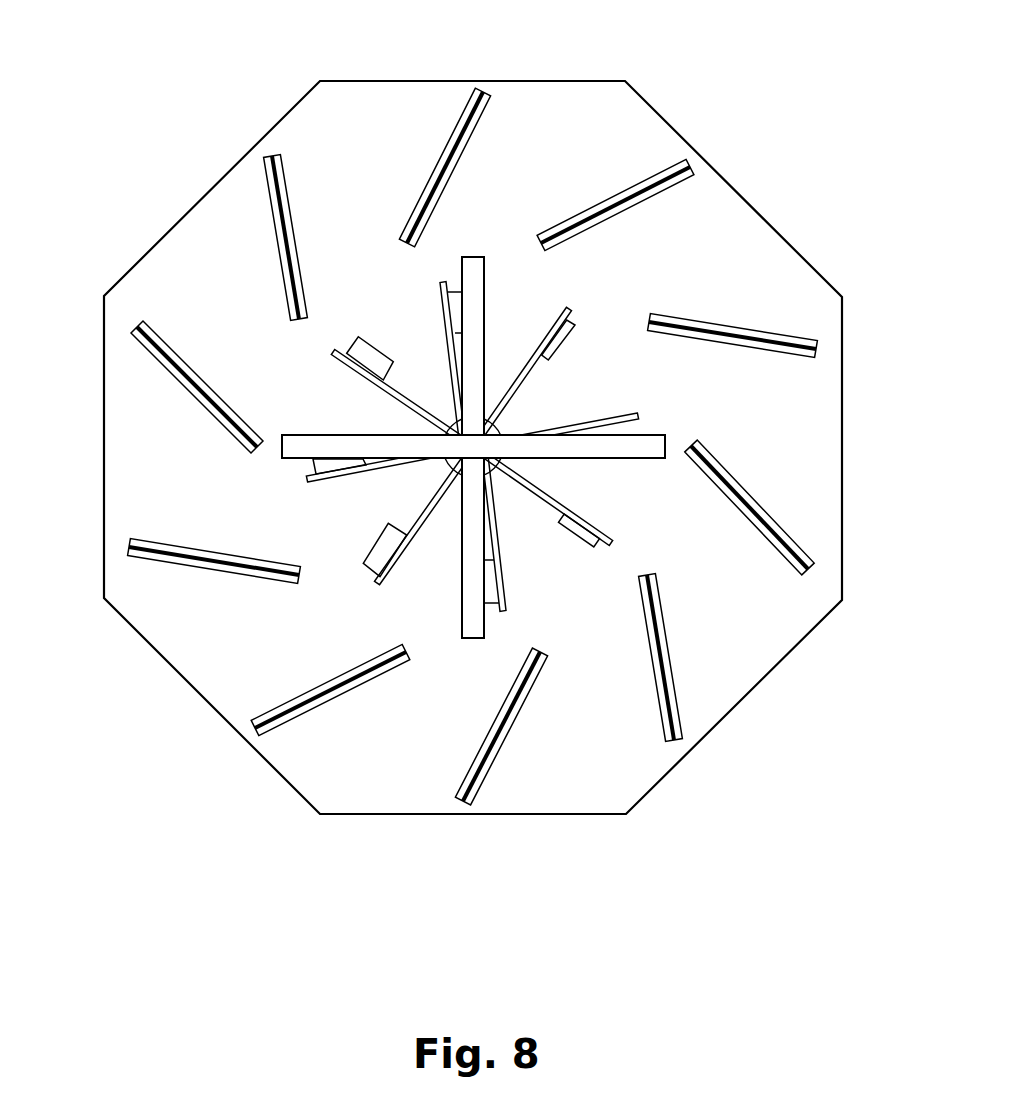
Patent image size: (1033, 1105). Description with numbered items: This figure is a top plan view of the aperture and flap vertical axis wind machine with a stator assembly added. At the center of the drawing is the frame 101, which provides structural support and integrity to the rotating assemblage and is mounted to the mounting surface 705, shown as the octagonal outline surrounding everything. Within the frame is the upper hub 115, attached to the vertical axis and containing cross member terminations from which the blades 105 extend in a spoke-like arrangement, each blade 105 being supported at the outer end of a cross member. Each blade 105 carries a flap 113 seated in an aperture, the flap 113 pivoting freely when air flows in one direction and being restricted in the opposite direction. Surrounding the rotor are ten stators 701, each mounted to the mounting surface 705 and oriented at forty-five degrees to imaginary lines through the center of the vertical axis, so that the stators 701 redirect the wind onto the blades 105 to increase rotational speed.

The stator 701 is at (280, 223).
The mounting surface 705 is at (717, 618).
The frame 101 is at (648, 442).
The blade 105 is at (568, 307).
The flap 113 is at (572, 323).
The upper hub 115 is at (487, 470).